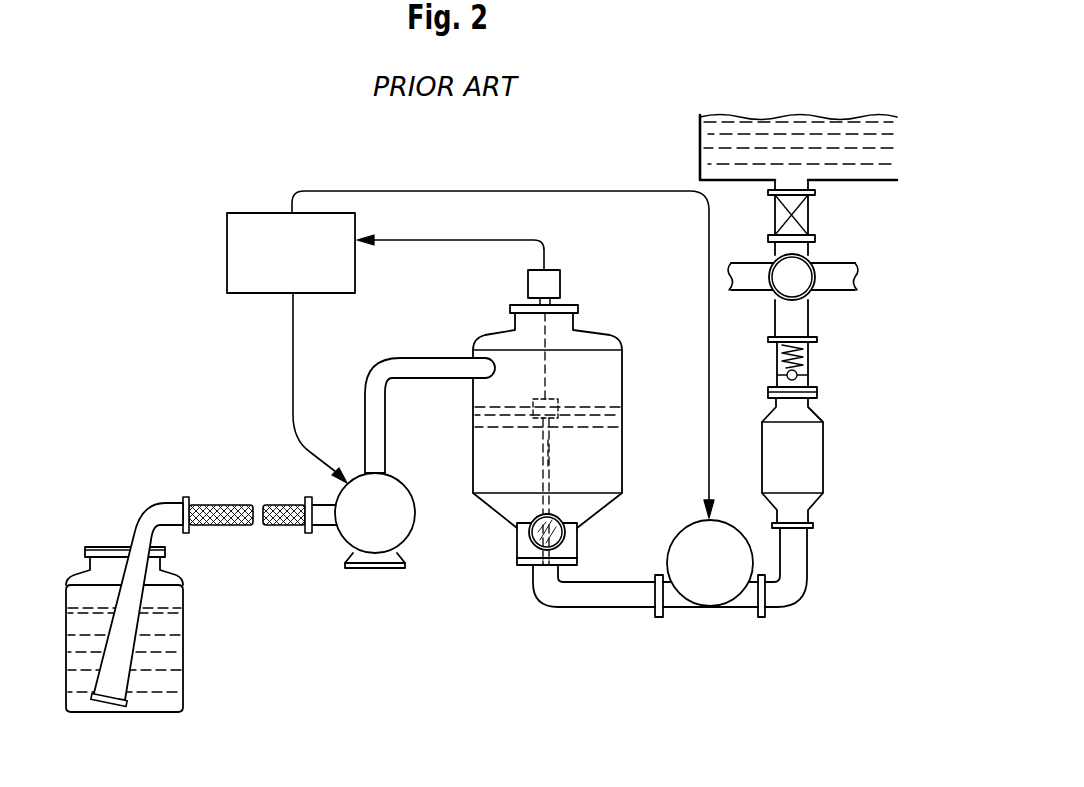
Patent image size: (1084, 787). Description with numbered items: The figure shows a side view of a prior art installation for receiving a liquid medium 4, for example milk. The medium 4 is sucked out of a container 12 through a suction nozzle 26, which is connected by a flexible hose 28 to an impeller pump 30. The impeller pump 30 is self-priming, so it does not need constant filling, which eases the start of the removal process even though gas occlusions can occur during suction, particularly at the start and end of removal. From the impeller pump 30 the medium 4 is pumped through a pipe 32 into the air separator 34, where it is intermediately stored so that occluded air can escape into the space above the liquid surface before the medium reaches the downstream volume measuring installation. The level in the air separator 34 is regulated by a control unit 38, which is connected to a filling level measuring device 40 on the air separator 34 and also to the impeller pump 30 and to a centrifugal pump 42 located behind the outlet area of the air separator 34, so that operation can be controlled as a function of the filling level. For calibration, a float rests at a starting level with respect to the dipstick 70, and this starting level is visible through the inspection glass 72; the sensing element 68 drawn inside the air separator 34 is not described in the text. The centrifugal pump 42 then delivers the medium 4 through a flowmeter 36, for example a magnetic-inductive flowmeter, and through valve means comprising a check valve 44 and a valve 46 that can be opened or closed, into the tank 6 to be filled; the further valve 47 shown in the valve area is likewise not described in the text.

The medium 4 is at (780, 140).
The tank 6 is at (702, 135).
The container 12 is at (186, 690).
The suction nozzle 26 is at (137, 525).
The flexible hose 28 is at (237, 505).
The impeller pump 30 is at (375, 538).
The pipe 32 is at (418, 367).
The air separator 34 is at (622, 368).
The flowmeter 36 is at (808, 460).
The control unit 38 is at (258, 232).
The filling level measuring device 40 is at (550, 278).
The centrifugal pump 42 is at (710, 587).
The check valve 44 is at (803, 360).
The valve 46 is at (802, 215).
The three-way valve 47 is at (803, 278).
The level sensor 68 is at (557, 402).
The dipstick 70 is at (550, 460).
The inspection glass 72 is at (530, 542).